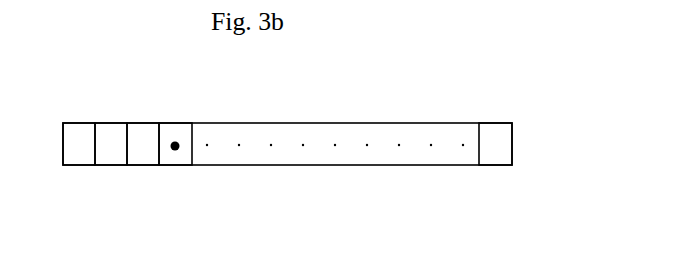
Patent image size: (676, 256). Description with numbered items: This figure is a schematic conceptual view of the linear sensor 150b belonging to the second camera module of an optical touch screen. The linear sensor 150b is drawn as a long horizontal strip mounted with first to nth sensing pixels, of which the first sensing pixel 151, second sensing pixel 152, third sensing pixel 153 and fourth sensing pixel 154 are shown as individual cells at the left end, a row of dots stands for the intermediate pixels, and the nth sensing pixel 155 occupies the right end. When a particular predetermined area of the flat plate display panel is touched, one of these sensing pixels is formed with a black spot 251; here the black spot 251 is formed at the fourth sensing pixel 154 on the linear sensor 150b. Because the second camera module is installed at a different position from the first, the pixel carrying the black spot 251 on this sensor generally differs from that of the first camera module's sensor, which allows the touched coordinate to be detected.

The linear sensor 150b is at (373, 113).
The first sensing pixel 151 is at (83, 130).
The second sensing pixel 152 is at (113, 130).
The third sensing pixel 153 is at (146, 130).
The fourth sensing pixel 154 is at (178, 130).
The nth sensing pixel 155 is at (497, 130).
The black spot 251 is at (177, 151).